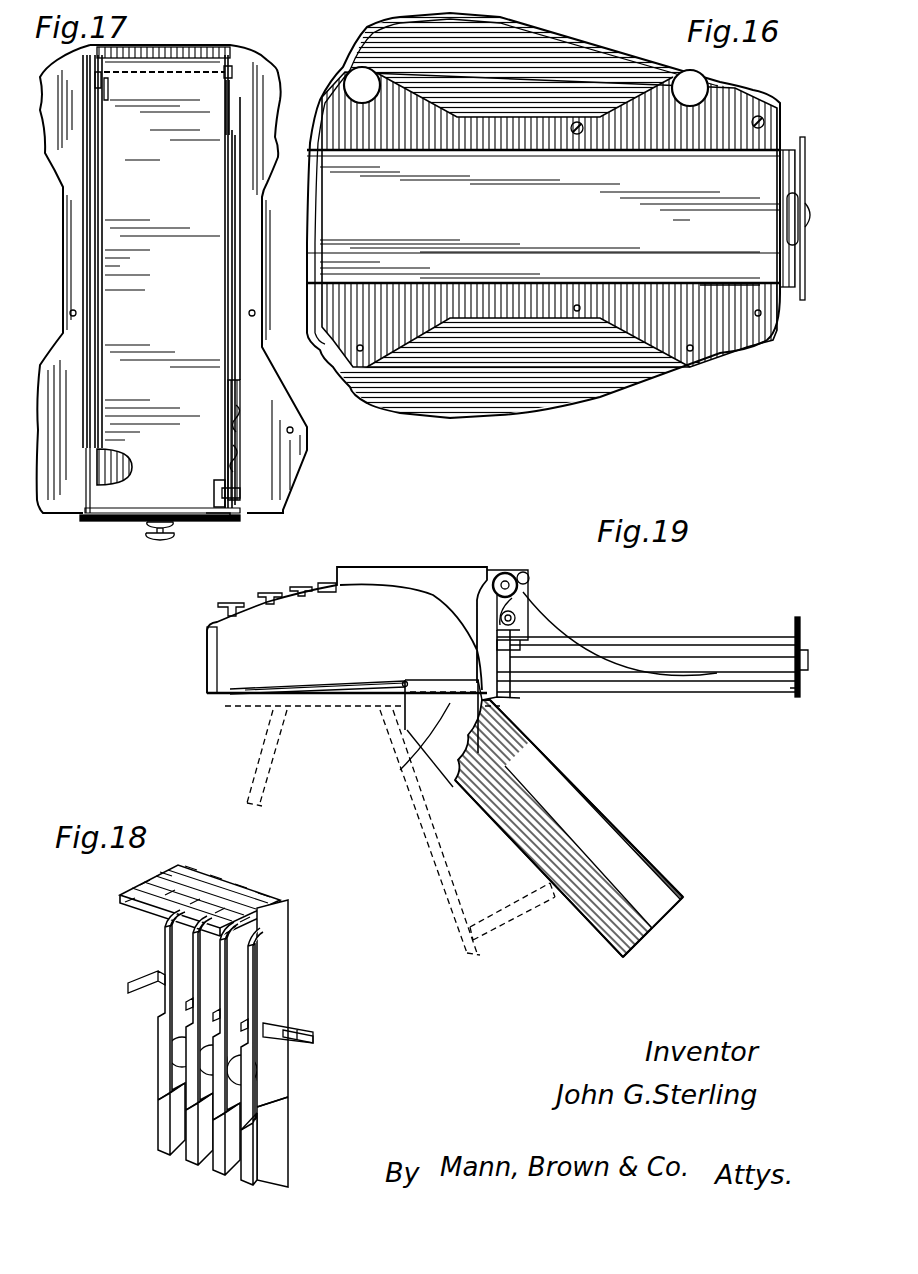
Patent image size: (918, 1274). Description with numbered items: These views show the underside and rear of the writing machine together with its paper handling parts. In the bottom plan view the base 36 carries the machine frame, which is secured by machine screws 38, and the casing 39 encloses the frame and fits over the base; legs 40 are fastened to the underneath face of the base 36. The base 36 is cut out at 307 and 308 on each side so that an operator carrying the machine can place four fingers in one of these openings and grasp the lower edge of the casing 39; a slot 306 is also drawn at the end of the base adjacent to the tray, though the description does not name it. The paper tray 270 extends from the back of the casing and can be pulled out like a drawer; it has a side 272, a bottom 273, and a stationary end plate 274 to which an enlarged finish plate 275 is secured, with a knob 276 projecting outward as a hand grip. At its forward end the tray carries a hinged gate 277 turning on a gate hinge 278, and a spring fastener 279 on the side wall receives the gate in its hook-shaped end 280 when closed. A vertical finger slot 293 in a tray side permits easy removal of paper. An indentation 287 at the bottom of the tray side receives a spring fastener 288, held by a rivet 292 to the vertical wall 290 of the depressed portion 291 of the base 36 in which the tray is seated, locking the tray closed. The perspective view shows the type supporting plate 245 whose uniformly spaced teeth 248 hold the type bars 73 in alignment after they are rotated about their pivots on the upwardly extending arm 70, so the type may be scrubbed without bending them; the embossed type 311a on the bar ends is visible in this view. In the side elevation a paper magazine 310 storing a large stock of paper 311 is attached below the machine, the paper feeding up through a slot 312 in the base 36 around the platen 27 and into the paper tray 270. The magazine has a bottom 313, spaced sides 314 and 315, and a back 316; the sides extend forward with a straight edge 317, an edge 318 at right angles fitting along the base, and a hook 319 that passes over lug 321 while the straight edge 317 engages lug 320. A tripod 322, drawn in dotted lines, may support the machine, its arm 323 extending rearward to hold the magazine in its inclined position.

In FIG. 19, the platen 27 is at (512, 572).
In FIG. 16, the base 36 is at (413, 139).
In FIG. 17, the base 36 is at (302, 420).
In FIG. 19, the base 36 is at (500, 697).
In FIG. 16, the machine screws 38 is at (751, 123).
In FIG. 16, the casing 39 is at (473, 420).
In FIG. 16, the legs 40 is at (350, 83).
In FIG. 18, the upwardly extending arm 70 is at (275, 1140).
In FIG. 18, the type bar 73 is at (195, 967).
In FIG. 18, the type supporting plate 245 is at (300, 1020).
In FIG. 18, the teeth 248 is at (285, 1045).
In FIG. 16, the paper tray 270 is at (791, 140).
In FIG. 17, the paper tray 270 is at (127, 521).
In FIG. 19, the paper tray 270 is at (718, 631).
In FIG. 17, the side 272 is at (226, 390).
In FIG. 17, the bottom 273 is at (172, 281).
In FIG. 17, the stationary end plate 274 is at (173, 493).
In FIG. 16, the finish plate 275 is at (803, 300).
In FIG. 17, the finish plate 275 is at (210, 521).
In FIG. 17, the knob 276 is at (162, 542).
In FIG. 17, the hinged gate 277 is at (184, 72).
In FIG. 17, the gate hinge 278 is at (103, 75).
In FIG. 17, the spring fastener 279 is at (223, 107).
In FIG. 17, the hook-shaped end 280 is at (231, 73).
In FIG. 17, the indentation 287 is at (223, 503).
In FIG. 16, the spring fastener 288 is at (733, 297).
In FIG. 17, the spring fastener 288 is at (241, 490).
In FIG. 17, the vertical wall 290 is at (236, 414).
In FIG. 19, the depressed portion 291 is at (348, 695).
In FIG. 17, the rivet 292 is at (236, 453).
In FIG. 17, the finger slot 293 is at (140, 433).
In FIG. 16, the slot 306 is at (790, 223).
In FIG. 16, the cut-out 307 is at (532, 97).
In FIG. 16, the cut-out 308 is at (545, 318).
In FIG. 19, the paper magazine 310 is at (690, 900).
In FIG. 19, the paper 311 is at (613, 848).
In FIG. 18, the paper 311 is at (130, 907).
In FIG. 18, the key top plate 311a is at (257, 900).
In FIG. 19, the slot 312 is at (498, 704).
In FIG. 19, the bottom 313 is at (604, 935).
In FIG. 19, the side 314 is at (435, 748).
In FIG. 19, the side 315 is at (583, 798).
In FIG. 19, the back 316 is at (650, 930).
In FIG. 19, the straight edge 317 is at (408, 718).
In FIG. 19, the edge 318 is at (405, 678).
In FIG. 19, the hook 319 is at (476, 682).
In FIG. 19, the lug 320 is at (404, 684).
In FIG. 19, the lug 321 is at (476, 690).
In FIG. 19, the tripod 322 is at (418, 822).
In FIG. 19, the arm 323 is at (502, 927).